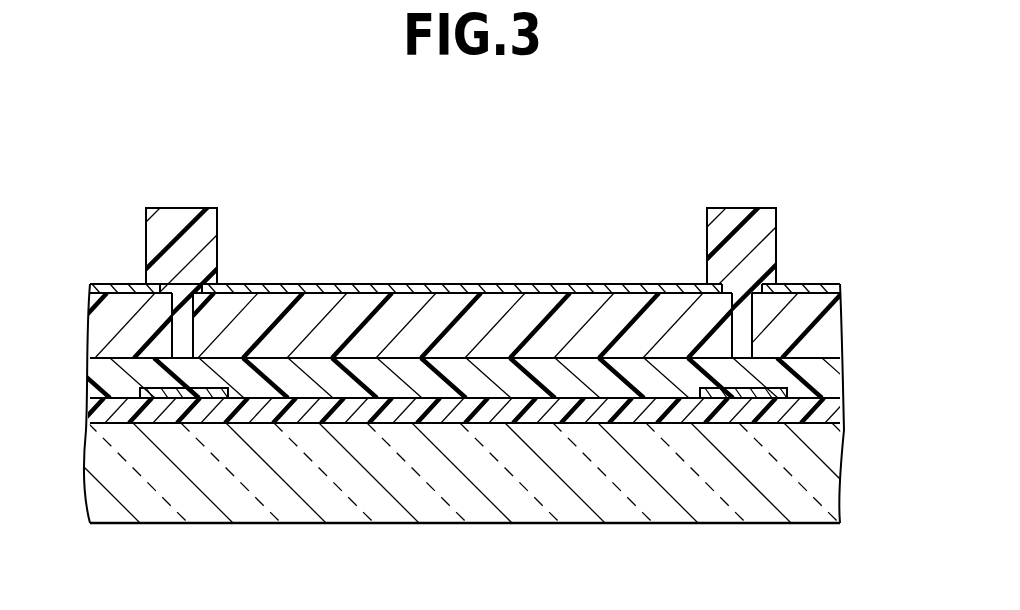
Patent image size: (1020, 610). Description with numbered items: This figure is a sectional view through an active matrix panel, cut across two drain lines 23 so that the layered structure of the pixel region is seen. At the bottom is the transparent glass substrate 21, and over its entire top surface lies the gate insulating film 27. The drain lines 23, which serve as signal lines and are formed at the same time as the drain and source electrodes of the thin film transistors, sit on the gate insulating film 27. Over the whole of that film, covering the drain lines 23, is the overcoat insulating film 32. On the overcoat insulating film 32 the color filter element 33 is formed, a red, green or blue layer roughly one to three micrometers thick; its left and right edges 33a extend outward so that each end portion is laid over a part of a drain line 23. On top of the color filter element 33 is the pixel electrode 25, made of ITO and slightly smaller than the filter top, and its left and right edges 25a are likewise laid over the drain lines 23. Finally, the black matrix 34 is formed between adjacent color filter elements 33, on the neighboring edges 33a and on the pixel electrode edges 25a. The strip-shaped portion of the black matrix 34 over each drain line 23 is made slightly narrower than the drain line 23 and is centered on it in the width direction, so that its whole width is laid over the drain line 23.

The glass substrate 21 is at (587, 512).
The drain line 23 is at (177, 393).
The pixel electrode 25 is at (466, 283).
The left and right edges of pixel electrode 25a is at (216, 291).
The gate insulating film 27 is at (345, 418).
The overcoat insulating film 32 is at (445, 385).
The color filter element 33 is at (578, 303).
The left and right edges of color filter element 33a is at (197, 332).
The black matrix 34 is at (170, 223).